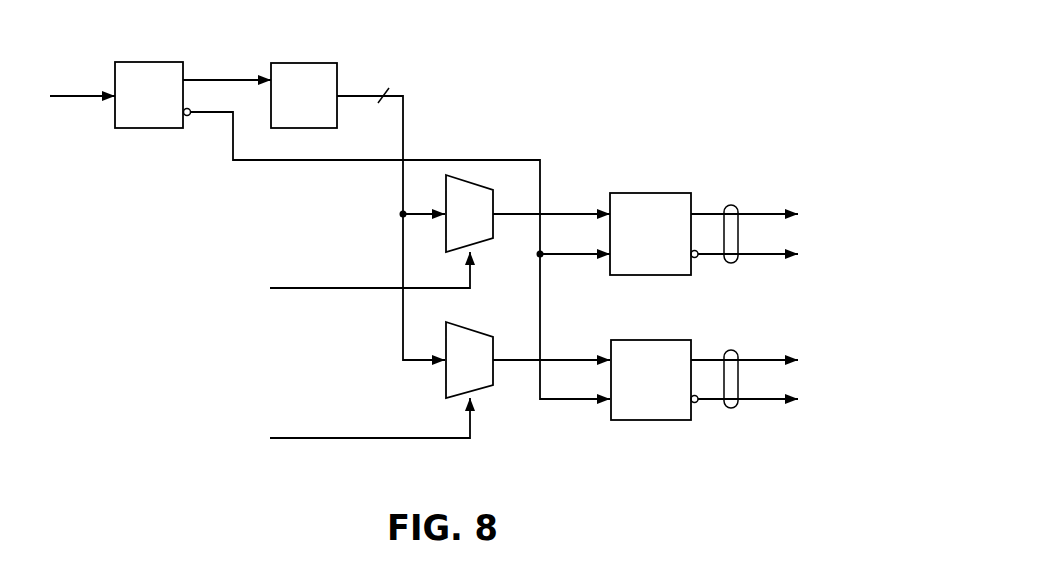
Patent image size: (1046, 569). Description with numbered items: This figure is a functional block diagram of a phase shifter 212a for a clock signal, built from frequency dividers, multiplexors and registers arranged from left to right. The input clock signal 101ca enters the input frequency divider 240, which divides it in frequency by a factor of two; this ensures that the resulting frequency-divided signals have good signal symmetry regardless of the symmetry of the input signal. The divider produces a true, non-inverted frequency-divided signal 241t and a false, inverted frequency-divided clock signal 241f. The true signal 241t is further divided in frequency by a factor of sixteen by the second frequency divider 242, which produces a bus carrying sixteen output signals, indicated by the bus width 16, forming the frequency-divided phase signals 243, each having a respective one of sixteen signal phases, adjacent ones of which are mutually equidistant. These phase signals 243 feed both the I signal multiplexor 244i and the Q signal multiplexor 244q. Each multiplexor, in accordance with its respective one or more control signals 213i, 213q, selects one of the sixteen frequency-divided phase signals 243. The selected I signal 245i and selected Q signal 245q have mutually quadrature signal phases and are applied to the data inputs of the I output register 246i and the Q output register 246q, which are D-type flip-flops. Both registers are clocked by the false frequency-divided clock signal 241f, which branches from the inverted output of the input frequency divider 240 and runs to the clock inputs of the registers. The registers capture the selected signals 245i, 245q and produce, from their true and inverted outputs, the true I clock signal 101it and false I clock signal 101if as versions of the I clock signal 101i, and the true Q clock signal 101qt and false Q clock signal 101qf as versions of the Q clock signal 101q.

The phase shifter 212a is at (618, 72).
The input clock signal 101ca is at (80, 95).
The input frequency divider 240 is at (146, 62).
The true frequency-divided signal 241t is at (230, 63).
The false frequency-divided clock signal 241f is at (233, 149).
The second frequency divider 242 is at (306, 63).
The signal phases 16 is at (391, 81).
The frequency-divided phase signals 243 is at (405, 115).
The I signal multiplexor 244i is at (445, 195).
The Q signal multiplexor 244q is at (445, 372).
The I multiplexor control signal 213i is at (290, 288).
The Q multiplexor control signal 213q is at (290, 438).
The selected I signal 245i is at (562, 212).
The selected Q signal 245q is at (562, 358).
The I output register 246i is at (651, 193).
The Q output register 246q is at (651, 340).
The I clock signal 101i is at (734, 205).
The Q clock signal 101q is at (734, 350).
The true I clock signal 101it is at (770, 212).
The false I clock signal 101if is at (770, 251).
The true Q clock signal 101qt is at (770, 357).
The false Q clock signal 101qf is at (770, 396).